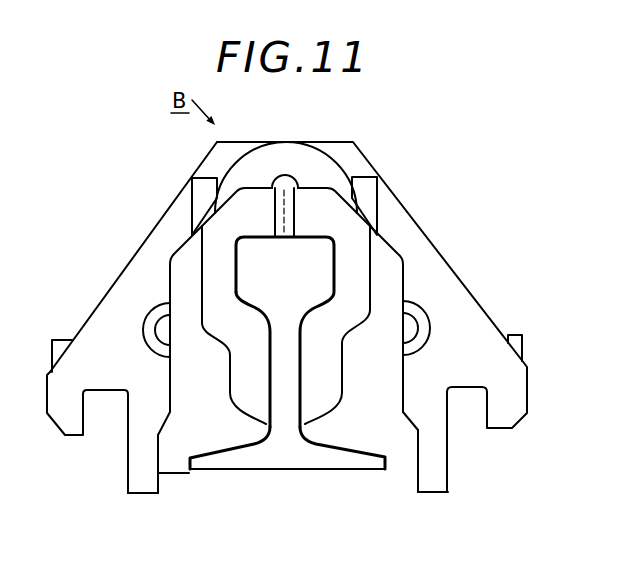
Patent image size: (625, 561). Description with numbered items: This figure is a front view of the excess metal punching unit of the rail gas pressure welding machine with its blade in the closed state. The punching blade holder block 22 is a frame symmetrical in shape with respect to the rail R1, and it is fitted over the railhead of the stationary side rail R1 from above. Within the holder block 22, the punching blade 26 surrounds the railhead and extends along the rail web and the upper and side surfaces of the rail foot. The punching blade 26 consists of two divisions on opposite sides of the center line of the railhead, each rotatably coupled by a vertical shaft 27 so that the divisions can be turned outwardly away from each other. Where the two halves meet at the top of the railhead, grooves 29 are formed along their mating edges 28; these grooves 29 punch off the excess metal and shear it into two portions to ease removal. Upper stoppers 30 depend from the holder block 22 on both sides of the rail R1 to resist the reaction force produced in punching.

The punching blade holder block 22 is at (446, 283).
The punching blade 26 is at (357, 263).
The vertical shafts 27 is at (197, 190).
The mating edges 28 is at (284, 186).
The grooves 29 is at (291, 197).
The upper stoppers 30 is at (143, 485).
The rail R1 is at (238, 258).